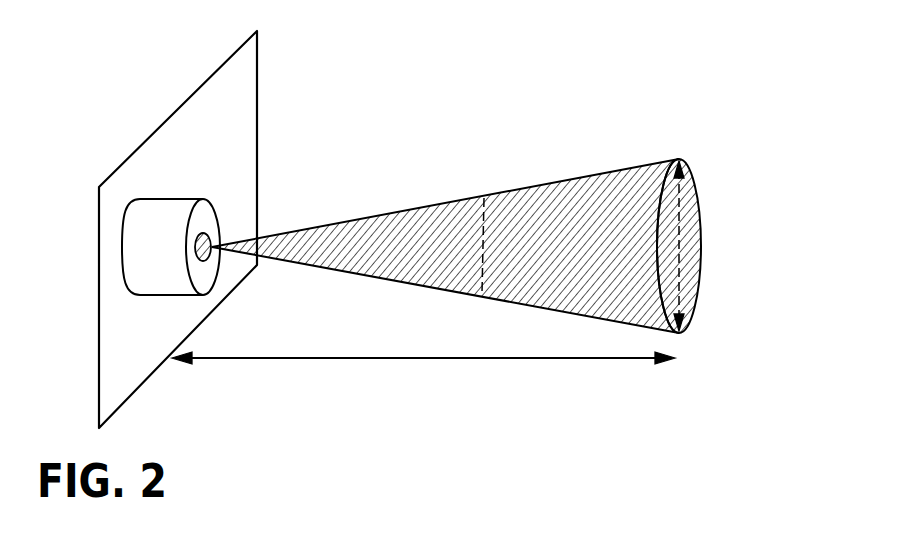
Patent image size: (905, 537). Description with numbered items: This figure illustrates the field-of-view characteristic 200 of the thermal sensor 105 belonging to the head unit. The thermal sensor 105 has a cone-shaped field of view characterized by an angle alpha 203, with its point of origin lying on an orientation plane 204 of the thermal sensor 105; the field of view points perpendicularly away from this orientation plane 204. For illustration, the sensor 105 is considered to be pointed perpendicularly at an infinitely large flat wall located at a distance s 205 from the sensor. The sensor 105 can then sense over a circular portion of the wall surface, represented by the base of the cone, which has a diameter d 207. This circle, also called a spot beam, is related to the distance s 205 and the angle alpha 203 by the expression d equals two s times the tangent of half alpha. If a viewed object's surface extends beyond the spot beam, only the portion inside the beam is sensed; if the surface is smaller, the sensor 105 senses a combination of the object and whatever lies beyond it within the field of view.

The projection arrangement 200 is at (271, 406).
The thermal sensor 105 is at (178, 199).
The angle α 203 is at (510, 189).
The orientation plane 204 is at (258, 98).
The distance s 205 is at (478, 360).
The diameter d 207 is at (680, 217).